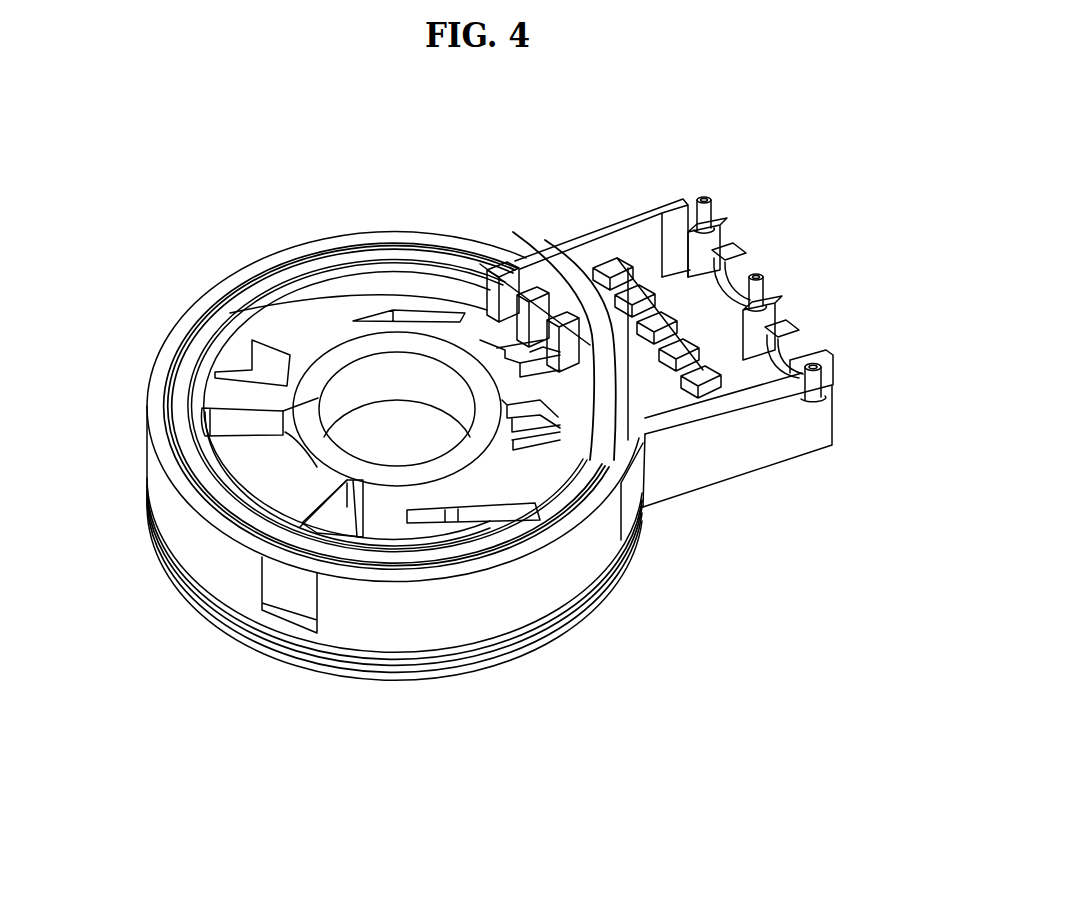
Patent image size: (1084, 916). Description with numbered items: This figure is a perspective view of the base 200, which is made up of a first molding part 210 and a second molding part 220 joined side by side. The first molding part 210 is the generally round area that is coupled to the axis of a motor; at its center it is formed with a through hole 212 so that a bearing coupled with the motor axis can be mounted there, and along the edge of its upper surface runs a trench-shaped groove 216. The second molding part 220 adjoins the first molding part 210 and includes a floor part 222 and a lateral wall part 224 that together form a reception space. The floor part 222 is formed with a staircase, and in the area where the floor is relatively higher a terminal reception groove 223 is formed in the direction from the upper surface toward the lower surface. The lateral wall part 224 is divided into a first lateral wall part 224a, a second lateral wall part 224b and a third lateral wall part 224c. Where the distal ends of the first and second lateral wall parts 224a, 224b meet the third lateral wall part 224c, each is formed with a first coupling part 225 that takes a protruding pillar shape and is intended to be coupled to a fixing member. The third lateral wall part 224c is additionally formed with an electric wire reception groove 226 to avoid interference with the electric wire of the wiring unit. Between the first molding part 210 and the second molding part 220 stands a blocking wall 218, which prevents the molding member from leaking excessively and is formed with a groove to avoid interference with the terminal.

The base 200 is at (247, 657).
The first molding part 210 is at (207, 560).
The through hole 212 is at (397, 410).
The trench-shaped groove 216 is at (183, 377).
The blocking wall 218 is at (437, 267).
The second molding part 220 is at (732, 446).
The floor part 222 is at (687, 304).
The terminal reception groove 223 is at (550, 347).
The lateral wall part 224 is at (634, 212).
The first lateral wall part 224a is at (607, 250).
The second lateral wall part 224b is at (800, 437).
The third lateral wall part 224c is at (803, 353).
The first coupling part 225 is at (700, 193).
The electric wire reception groove 226 is at (770, 313).